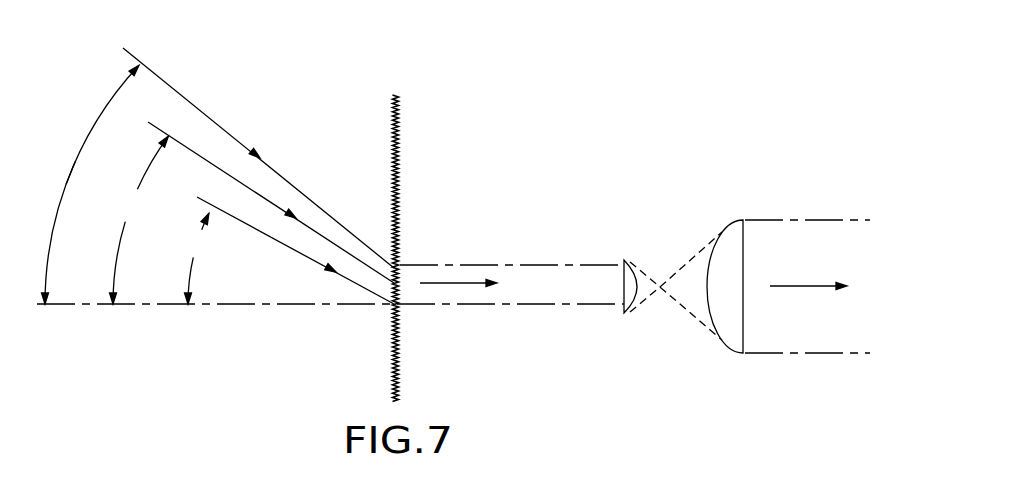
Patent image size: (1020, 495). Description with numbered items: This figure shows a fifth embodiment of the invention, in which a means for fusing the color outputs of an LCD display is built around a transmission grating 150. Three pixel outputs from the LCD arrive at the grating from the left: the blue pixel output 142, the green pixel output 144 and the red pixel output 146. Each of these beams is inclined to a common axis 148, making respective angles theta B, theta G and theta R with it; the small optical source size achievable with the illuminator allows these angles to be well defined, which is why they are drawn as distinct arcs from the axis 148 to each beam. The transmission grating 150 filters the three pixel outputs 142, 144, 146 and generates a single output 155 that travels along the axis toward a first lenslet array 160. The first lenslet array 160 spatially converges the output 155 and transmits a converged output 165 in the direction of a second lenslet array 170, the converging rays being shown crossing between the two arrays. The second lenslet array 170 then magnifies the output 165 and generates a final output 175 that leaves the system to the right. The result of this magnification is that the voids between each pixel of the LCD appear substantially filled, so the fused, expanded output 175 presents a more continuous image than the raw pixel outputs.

The blue pixel output 142 is at (135, 53).
The green pixel output 144 is at (165, 131).
The red pixel output 146 is at (203, 200).
The axis 148 is at (238, 305).
The transmission grating 150 is at (393, 158).
The output 155 is at (455, 282).
The first lenslet array 160 is at (623, 263).
The output 165 is at (660, 292).
The second lenslet array 170 is at (745, 230).
The output 175 is at (805, 285).